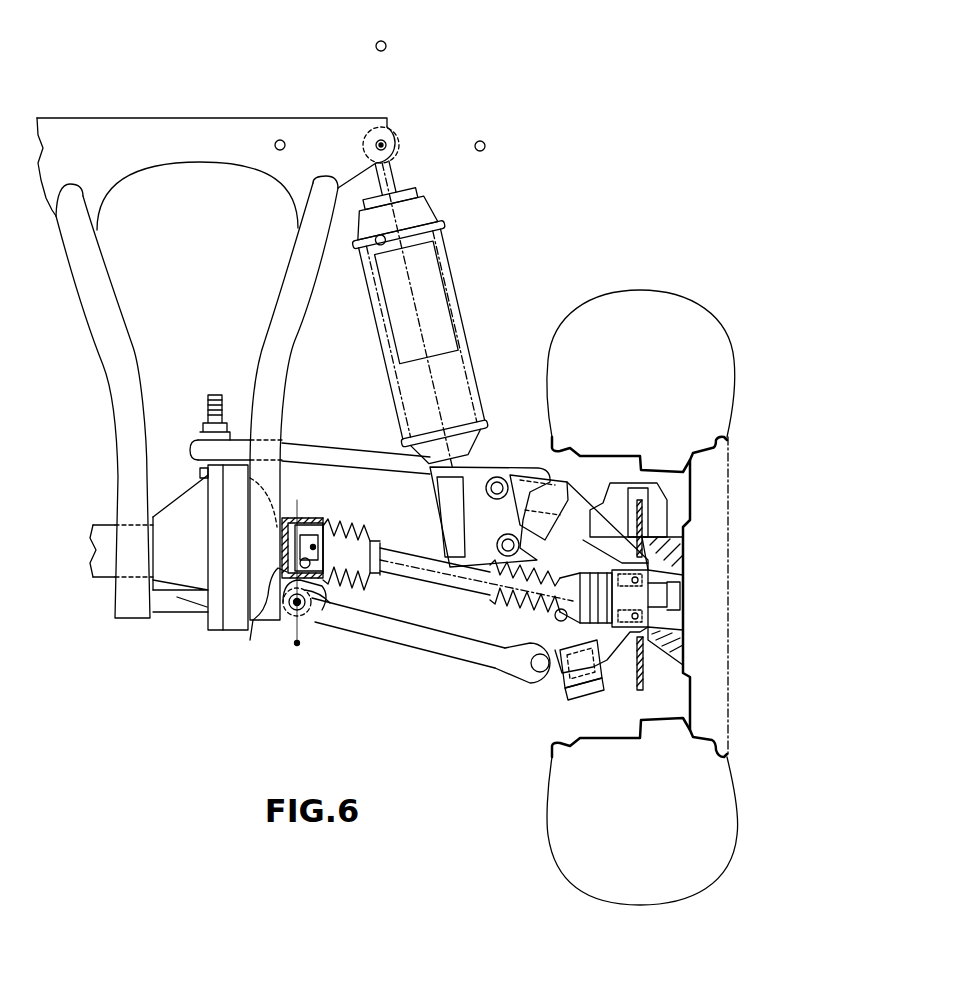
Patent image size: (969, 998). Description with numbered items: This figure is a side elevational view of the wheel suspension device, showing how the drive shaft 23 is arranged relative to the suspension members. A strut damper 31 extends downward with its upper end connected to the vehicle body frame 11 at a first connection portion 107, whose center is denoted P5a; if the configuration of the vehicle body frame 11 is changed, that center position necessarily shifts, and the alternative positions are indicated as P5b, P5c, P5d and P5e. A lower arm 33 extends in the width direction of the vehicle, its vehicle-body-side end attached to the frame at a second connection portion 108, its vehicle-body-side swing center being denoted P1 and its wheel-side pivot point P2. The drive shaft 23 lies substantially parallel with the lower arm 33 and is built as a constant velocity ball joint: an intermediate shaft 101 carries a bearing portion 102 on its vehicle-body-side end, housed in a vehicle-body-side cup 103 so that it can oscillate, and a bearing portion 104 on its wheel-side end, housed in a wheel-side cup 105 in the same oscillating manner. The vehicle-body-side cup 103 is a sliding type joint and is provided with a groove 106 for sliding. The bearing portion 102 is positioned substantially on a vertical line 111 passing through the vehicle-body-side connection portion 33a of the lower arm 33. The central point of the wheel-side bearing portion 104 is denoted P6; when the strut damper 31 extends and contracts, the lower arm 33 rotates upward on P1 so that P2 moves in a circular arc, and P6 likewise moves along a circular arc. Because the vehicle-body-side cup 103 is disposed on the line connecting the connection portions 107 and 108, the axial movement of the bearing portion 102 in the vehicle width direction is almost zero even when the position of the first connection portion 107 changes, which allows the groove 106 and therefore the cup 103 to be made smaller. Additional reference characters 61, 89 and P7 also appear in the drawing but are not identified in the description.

The vehicle body frame 11 is at (198, 130).
The center of the first connection portion P5a is at (378, 140).
The changed position of the center of the first connection portion P5b is at (385, 43).
The changed position of the center of the first connection portion P5c is at (485, 144).
The changed position of the center of the first connection portion P5d is at (385, 238).
The changed position of the first connection portion center P5e is at (282, 140).
The first connection portion 107 is at (390, 138).
The strut damper 31 is at (478, 239).
The damper cylinder body 89 is at (416, 295).
The knuckle 61 is at (497, 475).
The vehicle-body-side cup 103 is at (290, 518).
The bearing portion 102 is at (325, 520).
The inner joint center P7 is at (316, 545).
The intermediate shaft 101 is at (415, 568).
The groove 106 is at (277, 565).
The vehicle-body-side swing center of the lower arm P1 is at (292, 610).
The second connection portion 108 is at (316, 620).
The vertical line 111 is at (292, 650).
The vehicle-body-side connection portion 33a is at (320, 615).
The lower arm 33 is at (427, 658).
The drive shaft 23 is at (446, 604).
The central point of the wheel-side bearing portion P6 is at (556, 612).
The wheel-side pivot point of the lower arm P2 is at (535, 672).
The bearing portion 104 is at (565, 668).
The wheel-side cup 105 is at (557, 690).